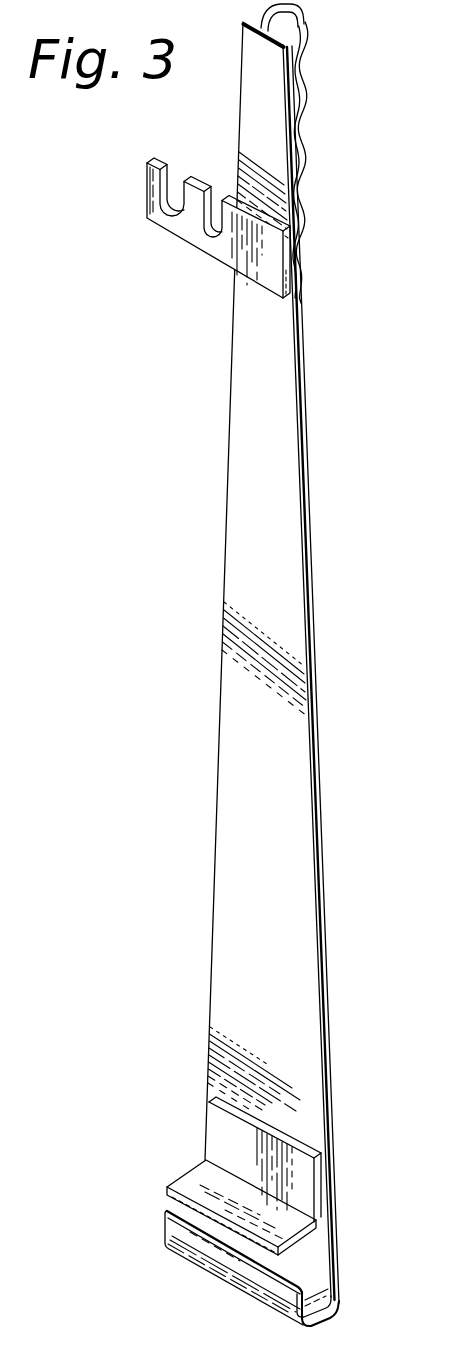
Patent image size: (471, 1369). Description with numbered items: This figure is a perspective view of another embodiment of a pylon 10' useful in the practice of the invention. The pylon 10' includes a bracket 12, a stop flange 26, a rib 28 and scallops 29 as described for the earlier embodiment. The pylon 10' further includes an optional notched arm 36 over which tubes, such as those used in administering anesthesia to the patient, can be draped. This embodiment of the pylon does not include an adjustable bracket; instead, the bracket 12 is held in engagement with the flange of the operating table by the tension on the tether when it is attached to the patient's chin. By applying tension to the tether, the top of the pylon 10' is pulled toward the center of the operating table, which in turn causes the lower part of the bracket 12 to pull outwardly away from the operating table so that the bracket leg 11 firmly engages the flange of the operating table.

The pylon 10' is at (302, 662).
The bracket leg 11 is at (165, 1217).
The bracket 12 is at (333, 1322).
The stop flange 26 is at (291, 1221).
The rib 28 is at (292, 17).
The scallops 29 is at (304, 116).
The notched arm 36 is at (170, 226).